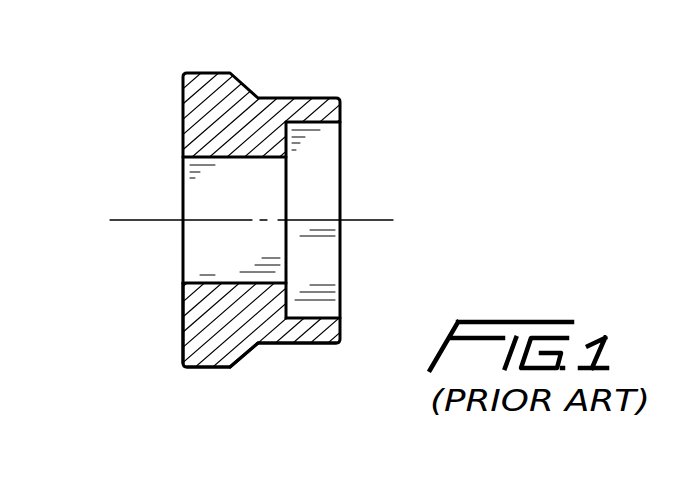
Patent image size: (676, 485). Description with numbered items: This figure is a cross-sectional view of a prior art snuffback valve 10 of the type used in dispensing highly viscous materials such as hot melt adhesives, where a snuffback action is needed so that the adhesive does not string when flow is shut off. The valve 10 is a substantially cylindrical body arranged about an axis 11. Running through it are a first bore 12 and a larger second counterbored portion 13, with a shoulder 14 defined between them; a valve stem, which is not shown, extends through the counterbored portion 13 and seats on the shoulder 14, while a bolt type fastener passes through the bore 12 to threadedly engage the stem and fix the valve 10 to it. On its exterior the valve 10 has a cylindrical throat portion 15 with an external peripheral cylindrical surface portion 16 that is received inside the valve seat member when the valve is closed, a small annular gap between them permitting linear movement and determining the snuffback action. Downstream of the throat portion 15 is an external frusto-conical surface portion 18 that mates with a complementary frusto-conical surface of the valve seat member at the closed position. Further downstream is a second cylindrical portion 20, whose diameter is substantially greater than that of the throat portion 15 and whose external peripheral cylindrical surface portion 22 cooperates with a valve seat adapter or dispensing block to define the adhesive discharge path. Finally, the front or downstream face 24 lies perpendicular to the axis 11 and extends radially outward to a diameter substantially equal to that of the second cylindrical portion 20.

The snuffback valve 10 is at (333, 88).
The axis 11 is at (382, 220).
The first bore 12 is at (220, 199).
The second counterbored portion 13 is at (298, 180).
The shoulder 14 is at (287, 297).
The cylindrical throat portion 15 is at (299, 327).
The external peripheral cylindrical surface portion 16 is at (328, 348).
The external frusto-conical surface portion 18 is at (252, 354).
The second cylindrical portion 20 is at (210, 342).
The external peripheral cylindrical surface portion 22 is at (200, 369).
The front or downstream face 24 is at (182, 313).